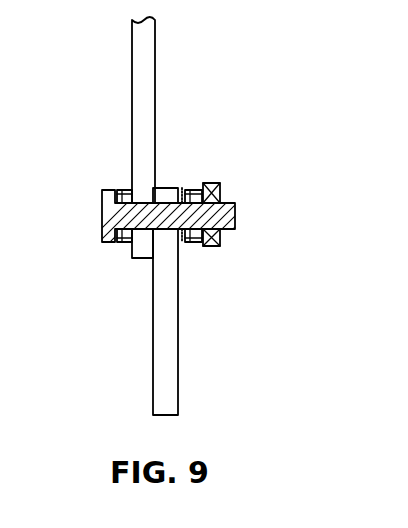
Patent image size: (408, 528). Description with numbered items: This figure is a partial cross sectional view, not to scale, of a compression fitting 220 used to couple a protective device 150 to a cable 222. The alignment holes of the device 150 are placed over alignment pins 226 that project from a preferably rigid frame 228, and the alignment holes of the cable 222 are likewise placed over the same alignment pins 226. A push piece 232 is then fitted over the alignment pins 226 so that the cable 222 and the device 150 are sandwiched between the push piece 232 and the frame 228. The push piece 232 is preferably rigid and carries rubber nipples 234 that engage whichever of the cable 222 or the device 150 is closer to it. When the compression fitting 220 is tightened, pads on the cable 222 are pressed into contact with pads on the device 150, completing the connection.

The protective device 150 is at (180, 358).
The compression fitting 220 is at (178, 212).
The cable 222 is at (155, 95).
The alignment pins 226 is at (243, 207).
The rigid frame 228 is at (127, 242).
The push piece 232 is at (190, 243).
The rubber nipples 234 is at (187, 176).